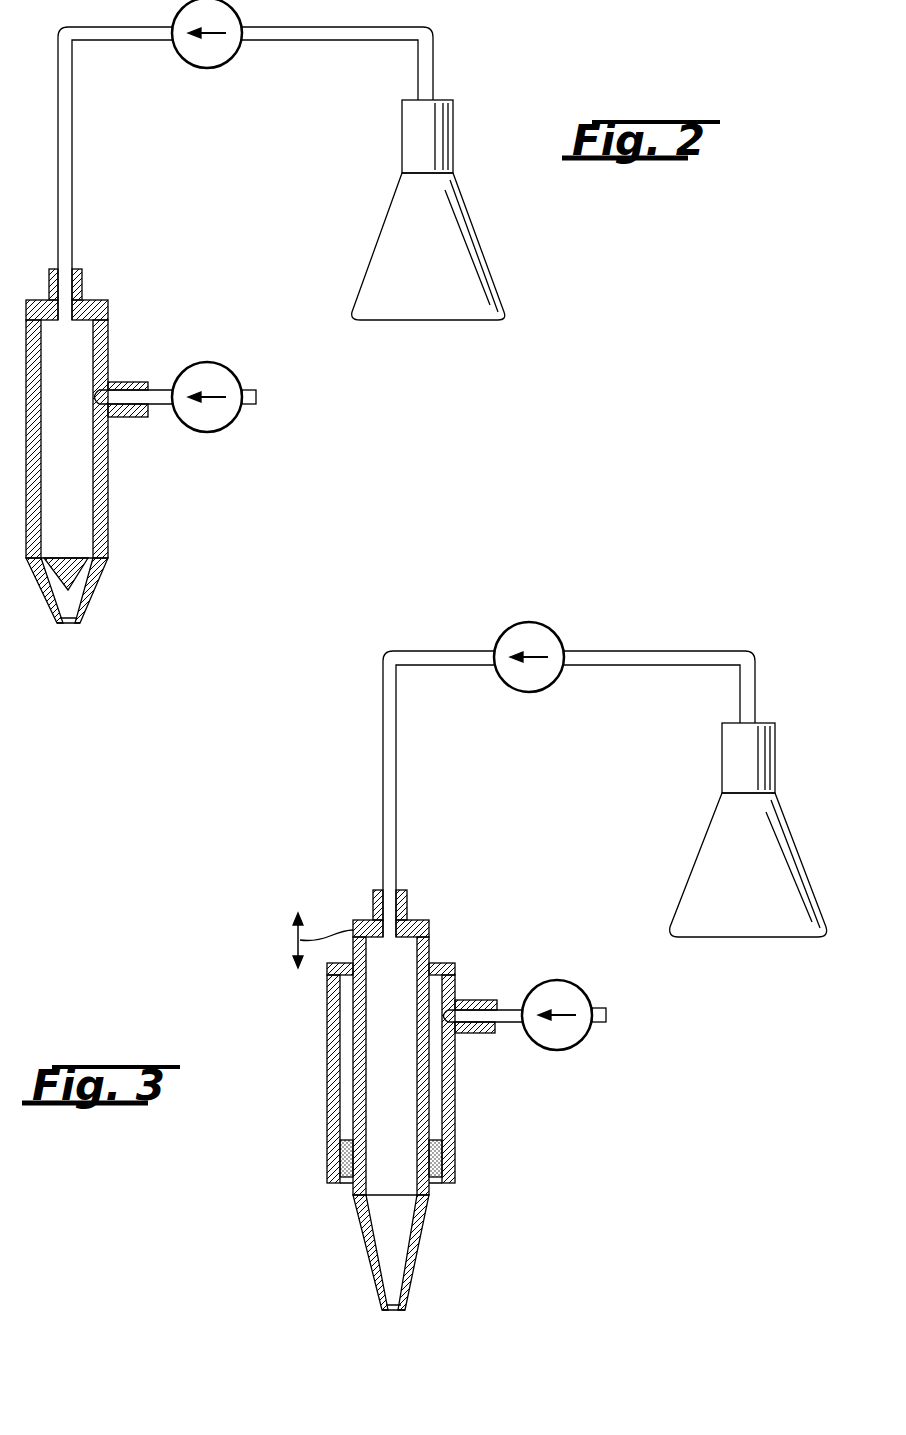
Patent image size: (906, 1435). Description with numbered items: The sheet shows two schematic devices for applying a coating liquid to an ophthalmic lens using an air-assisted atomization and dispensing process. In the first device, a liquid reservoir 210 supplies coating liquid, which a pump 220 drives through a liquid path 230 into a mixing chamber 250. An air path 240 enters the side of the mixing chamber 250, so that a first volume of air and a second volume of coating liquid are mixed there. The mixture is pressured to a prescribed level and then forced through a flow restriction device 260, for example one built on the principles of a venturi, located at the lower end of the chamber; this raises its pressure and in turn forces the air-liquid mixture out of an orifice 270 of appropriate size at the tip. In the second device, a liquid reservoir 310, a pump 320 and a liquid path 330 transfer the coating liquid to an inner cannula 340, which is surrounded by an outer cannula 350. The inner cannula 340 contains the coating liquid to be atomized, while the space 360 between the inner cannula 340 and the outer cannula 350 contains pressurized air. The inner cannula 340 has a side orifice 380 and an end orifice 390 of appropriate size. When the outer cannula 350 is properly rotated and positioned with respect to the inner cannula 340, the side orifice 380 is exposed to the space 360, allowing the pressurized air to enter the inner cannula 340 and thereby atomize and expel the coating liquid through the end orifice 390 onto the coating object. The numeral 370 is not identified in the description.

In FIG. 2, the liquid reservoir 210 is at (388, 245).
In FIG. 2, the pump 220 is at (208, 58).
In FIG. 2, the liquid path 230 is at (67, 190).
In FIG. 2, the air path 240 is at (133, 380).
In FIG. 2, the mixing chamber 250 is at (80, 484).
In FIG. 2, the flow restriction device 260 is at (72, 582).
In FIG. 2, the orifice 270 is at (71, 628).
In FIG. 3, the liquid reservoir 310 is at (710, 868).
In FIG. 3, the pump 320 is at (533, 682).
In FIG. 3, the liquid path 330 is at (392, 812).
In FIG. 3, the inner cannula 340 is at (365, 1243).
In FIG. 3, the outer cannula 350 is at (448, 1110).
In FIG. 3, the space 360 is at (433, 1060).
In FIG. 3, the inner tube 370 is at (372, 1043).
In FIG. 3, the side orifice 380 is at (435, 1160).
In FIG. 3, the end orifice 390 is at (392, 1315).